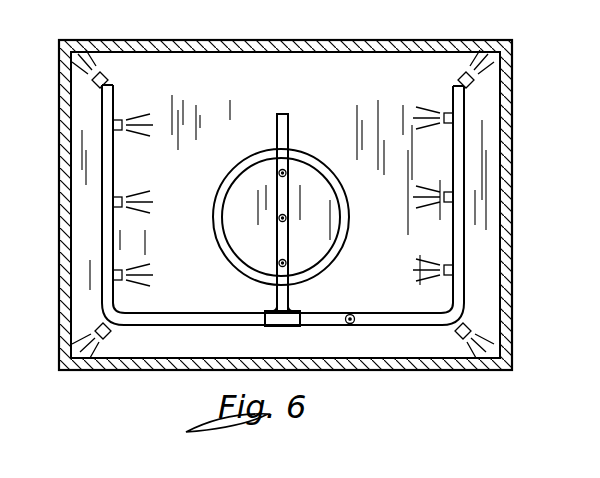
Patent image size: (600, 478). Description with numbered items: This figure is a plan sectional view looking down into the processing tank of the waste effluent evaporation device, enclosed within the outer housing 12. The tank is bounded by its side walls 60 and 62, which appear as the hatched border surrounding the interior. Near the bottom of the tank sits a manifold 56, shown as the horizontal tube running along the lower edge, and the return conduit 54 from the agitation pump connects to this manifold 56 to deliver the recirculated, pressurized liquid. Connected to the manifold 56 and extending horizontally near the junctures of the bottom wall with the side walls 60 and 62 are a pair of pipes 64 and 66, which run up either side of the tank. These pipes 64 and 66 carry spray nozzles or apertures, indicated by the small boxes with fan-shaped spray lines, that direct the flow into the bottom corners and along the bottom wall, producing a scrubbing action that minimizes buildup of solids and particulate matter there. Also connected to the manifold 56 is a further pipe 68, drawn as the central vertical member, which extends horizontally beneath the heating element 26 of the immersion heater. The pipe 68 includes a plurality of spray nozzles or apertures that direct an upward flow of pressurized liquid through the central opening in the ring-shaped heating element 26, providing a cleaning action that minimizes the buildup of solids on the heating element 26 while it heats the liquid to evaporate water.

The outer housing 12 is at (505, 187).
The heating element 26 is at (336, 170).
The return conduit 54 is at (353, 314).
The manifold 56 is at (180, 313).
The side wall 60 is at (78, 170).
The side wall 62 is at (499, 218).
The pipe 64 is at (114, 176).
The pipe 66 is at (458, 141).
The pipe 68 is at (284, 302).